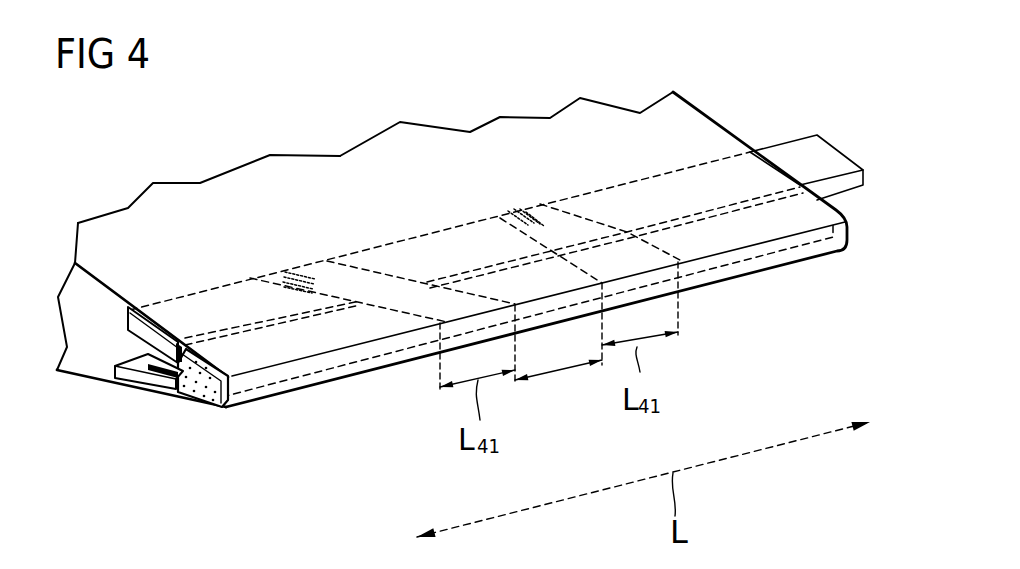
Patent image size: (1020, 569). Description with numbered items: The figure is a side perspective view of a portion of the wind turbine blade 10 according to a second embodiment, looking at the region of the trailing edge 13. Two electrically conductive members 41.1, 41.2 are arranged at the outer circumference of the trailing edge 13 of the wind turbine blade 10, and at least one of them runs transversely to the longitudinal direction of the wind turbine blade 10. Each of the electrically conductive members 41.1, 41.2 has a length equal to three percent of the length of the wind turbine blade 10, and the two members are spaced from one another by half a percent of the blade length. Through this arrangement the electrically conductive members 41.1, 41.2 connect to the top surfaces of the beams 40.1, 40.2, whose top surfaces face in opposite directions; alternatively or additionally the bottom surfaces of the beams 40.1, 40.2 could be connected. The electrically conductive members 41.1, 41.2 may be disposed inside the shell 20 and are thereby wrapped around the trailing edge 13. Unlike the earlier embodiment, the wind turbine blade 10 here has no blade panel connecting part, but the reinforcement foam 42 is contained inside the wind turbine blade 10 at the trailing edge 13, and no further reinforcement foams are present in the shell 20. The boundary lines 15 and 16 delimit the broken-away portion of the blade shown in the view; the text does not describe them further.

The wind turbine blade 10 is at (677, 115).
The trailing edge 13 is at (343, 396).
The first break-line edge of carrier 15 is at (148, 207).
The second break-line edge of carrier 16 is at (78, 378).
The shell 20 is at (392, 153).
The beam 40.1 is at (207, 293).
The beam 40.2 is at (144, 381).
The electrically conductive member 41.1 is at (327, 266).
The electrically conductive member 41.2 is at (542, 207).
The reinforcement foam 42 is at (206, 404).